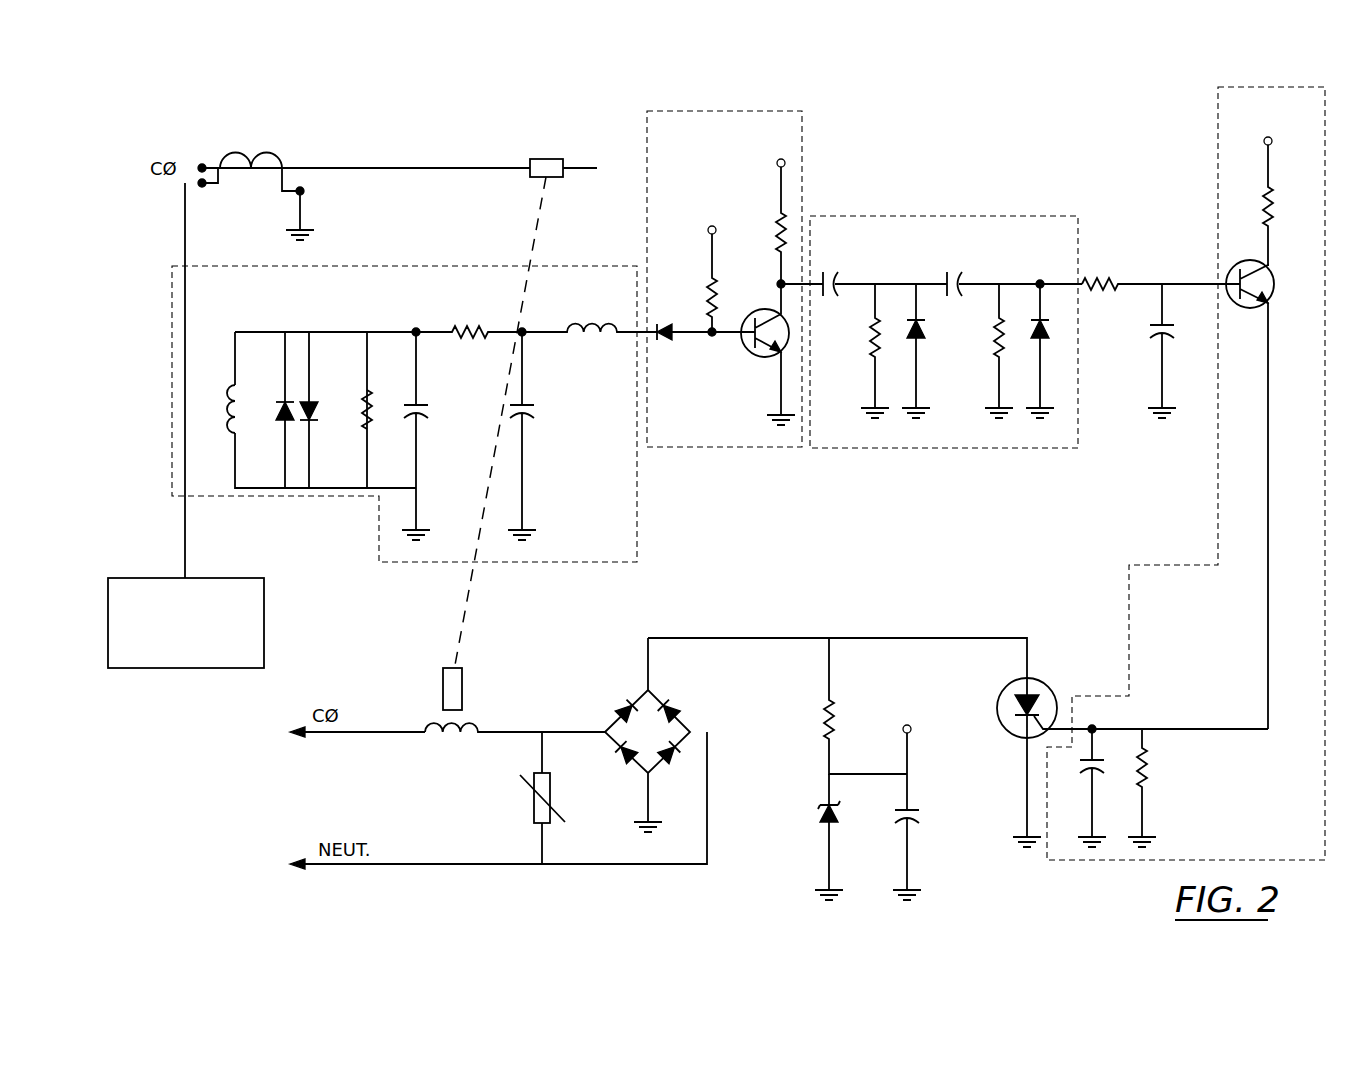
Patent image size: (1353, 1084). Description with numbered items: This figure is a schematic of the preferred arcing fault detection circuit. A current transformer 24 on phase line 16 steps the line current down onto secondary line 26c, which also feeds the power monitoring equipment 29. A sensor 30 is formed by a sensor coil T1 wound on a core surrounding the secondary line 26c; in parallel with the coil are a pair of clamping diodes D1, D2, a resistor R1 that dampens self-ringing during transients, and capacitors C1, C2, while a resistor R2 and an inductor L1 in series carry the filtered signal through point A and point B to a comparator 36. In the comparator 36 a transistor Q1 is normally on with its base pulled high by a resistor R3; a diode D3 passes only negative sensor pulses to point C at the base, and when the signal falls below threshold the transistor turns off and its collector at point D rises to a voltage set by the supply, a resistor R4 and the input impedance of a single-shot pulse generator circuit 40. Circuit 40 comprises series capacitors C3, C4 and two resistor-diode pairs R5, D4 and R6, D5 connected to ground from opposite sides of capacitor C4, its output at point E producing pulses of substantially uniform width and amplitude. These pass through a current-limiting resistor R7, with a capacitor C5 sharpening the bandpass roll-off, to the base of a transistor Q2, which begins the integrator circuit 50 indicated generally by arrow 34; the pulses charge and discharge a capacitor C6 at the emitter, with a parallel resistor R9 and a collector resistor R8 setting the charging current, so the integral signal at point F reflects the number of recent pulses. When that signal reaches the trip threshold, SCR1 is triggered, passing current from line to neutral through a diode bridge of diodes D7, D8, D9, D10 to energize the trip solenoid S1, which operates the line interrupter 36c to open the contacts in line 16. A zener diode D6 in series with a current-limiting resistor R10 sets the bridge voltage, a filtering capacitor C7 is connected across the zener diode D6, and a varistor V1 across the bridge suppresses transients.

The phase line 16 is at (325, 165).
The current transformer 24 is at (262, 156).
The secondary line 26c is at (178, 235).
The power monitoring equipment 29 is at (236, 578).
The sensor 30 is at (390, 265).
The detector circuit 34 is at (1050, 166).
The comparator 36 is at (804, 125).
The line interrupter 36c is at (504, 424).
The single-shot pulse generator circuit 40 is at (942, 215).
The integrator circuit 50 is at (1152, 565).
The sensor coil T1 is at (226, 420).
The diode D1 is at (283, 400).
The diode D2 is at (312, 400).
The resistor R1 is at (372, 420).
The capacitor C1 is at (425, 400).
The resistor R2 is at (467, 325).
The capacitor C2 is at (530, 400).
The inductor L1 is at (585, 325).
The diode D3 is at (665, 345).
The resistor R3 is at (709, 285).
The resistor R4 is at (776, 215).
The transistor Q1 is at (764, 358).
The capacitor C3 is at (835, 281).
The resistor R5 is at (868, 352).
The diode D4 is at (923, 336).
The capacitor C4 is at (960, 282).
The resistor R6 is at (990, 350).
The diode D5 is at (1047, 336).
The current-limiting resistor R7 is at (1100, 278).
The capacitor C5 is at (1172, 336).
The resistor R8 is at (1262, 212).
The transistor Q2 is at (1276, 288).
The trip solenoid S1 is at (450, 742).
The varistor V1 is at (535, 806).
The diode D7 is at (681, 706).
The diode D8 is at (675, 760).
The diode D9 is at (625, 760).
The diode D10 is at (612, 703).
The current-limiting resistor R10 is at (822, 720).
The zener diode D6 is at (822, 814).
The filtering capacitor C7 is at (916, 814).
The SCR SCR1 is at (1057, 688).
The capacitor C6 is at (1082, 769).
The resistor R9 is at (1155, 752).
The node A is at (416, 330).
The point B is at (524, 331).
The point C is at (712, 340).
The point D is at (778, 284).
The node E is at (1042, 282).
The point F is at (1097, 728).